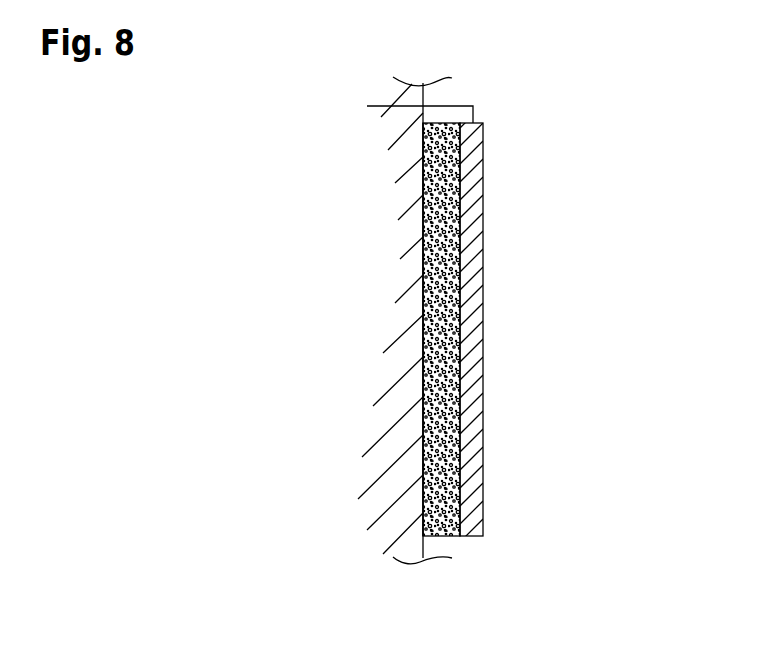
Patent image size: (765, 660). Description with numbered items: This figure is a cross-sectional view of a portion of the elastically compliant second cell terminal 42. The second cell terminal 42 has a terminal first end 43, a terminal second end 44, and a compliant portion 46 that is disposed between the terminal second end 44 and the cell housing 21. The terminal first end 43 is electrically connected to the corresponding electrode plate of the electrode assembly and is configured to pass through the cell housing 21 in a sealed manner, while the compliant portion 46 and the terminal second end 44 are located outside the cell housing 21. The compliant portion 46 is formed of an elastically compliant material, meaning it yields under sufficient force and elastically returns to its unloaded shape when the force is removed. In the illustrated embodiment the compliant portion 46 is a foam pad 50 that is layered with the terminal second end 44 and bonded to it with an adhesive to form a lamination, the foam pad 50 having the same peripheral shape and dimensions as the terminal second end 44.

The second cell terminal 42 is at (632, 92).
The terminal first end 43 is at (447, 106).
The terminal second end 44 is at (472, 202).
The compliant portion 46 is at (460, 287).
The foam pad 50 is at (447, 350).
The cell housing 21 is at (425, 408).